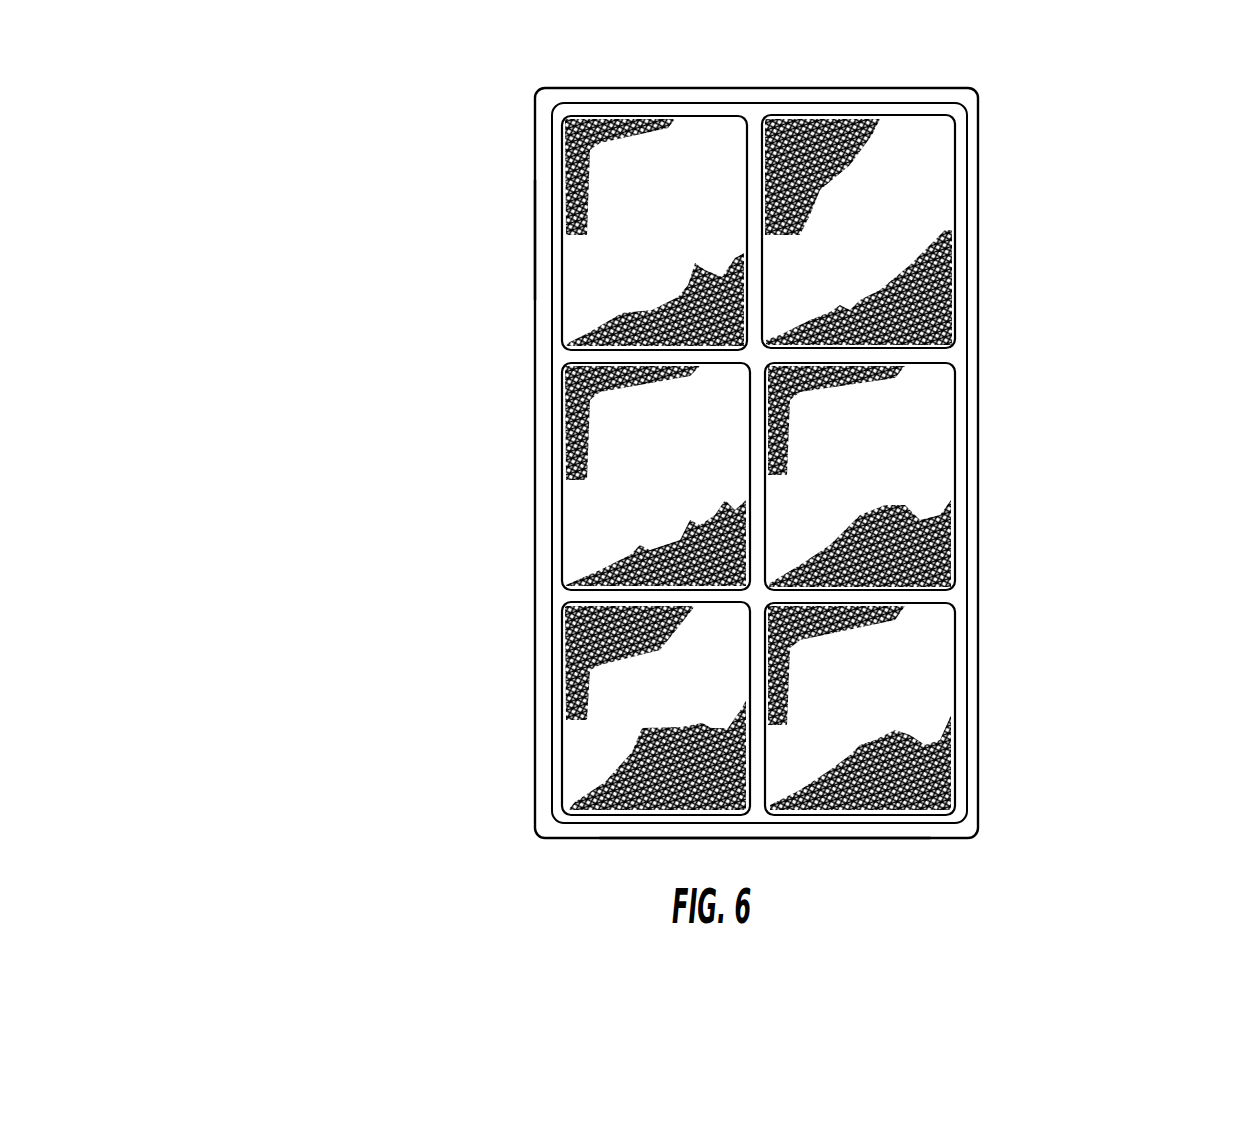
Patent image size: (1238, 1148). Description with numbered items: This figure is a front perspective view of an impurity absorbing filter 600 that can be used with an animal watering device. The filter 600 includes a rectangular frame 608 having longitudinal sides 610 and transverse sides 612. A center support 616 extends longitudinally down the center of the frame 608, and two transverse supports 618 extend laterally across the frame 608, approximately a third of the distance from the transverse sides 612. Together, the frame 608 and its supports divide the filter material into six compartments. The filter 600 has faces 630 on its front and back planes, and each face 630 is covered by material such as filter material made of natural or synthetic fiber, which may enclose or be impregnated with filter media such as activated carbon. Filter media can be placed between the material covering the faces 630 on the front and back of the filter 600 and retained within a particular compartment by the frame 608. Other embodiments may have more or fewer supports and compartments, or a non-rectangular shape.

The impurity absorbing filter 600 is at (1075, 604).
The rectangular frame 608 is at (535, 237).
The longitudinal sides 610 is at (535, 428).
The transverse sides 612 is at (907, 840).
The center support 616 is at (760, 245).
The transverse supports 618 is at (848, 350).
The faces 630 is at (935, 525).